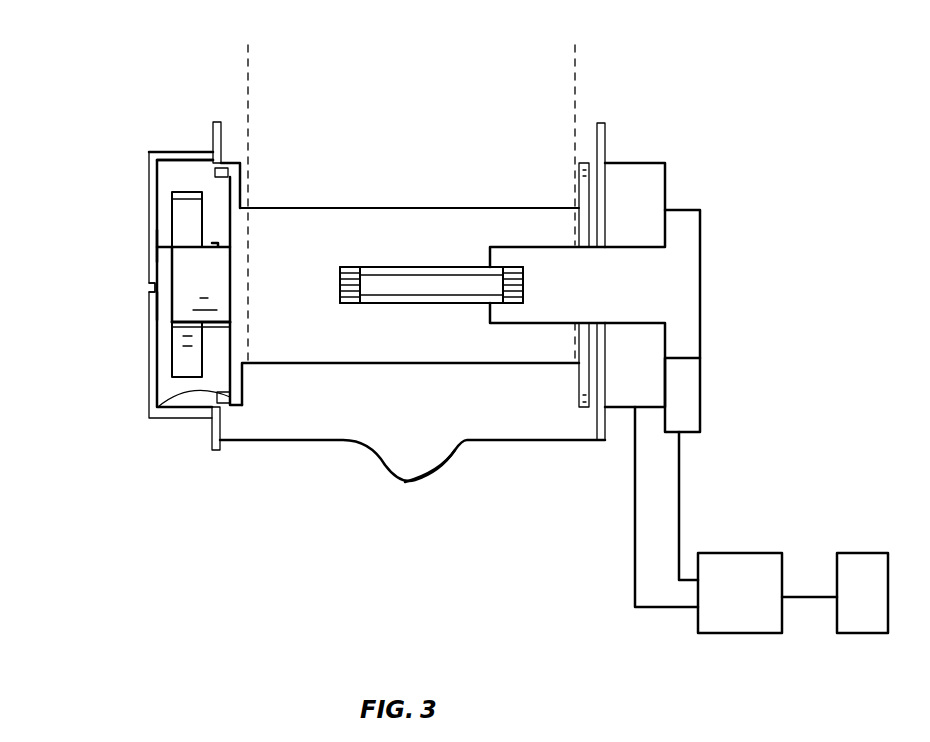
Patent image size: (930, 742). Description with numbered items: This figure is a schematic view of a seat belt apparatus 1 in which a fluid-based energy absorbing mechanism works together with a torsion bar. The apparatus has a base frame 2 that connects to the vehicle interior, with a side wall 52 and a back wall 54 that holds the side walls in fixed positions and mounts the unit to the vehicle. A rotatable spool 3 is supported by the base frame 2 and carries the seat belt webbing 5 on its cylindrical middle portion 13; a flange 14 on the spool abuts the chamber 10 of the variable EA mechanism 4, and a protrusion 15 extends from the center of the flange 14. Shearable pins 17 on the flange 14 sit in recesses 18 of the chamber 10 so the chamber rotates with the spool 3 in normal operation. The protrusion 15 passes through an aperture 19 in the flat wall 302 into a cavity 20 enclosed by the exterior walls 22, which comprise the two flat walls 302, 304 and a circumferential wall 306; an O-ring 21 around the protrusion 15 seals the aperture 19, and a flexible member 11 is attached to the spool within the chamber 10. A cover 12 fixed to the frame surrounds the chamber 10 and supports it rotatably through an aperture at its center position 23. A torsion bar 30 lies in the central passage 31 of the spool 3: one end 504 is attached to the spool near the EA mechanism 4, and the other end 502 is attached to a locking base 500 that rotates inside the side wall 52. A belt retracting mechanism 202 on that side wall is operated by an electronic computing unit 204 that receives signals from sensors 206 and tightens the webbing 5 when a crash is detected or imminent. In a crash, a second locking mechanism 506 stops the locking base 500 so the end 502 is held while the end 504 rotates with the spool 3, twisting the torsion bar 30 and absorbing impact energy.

The seat belt apparatus 1 is at (366, 154).
The base frame 2 is at (218, 446).
The rotatable spool 3 is at (440, 206).
The variable EA mechanism 4 is at (125, 440).
The seat belt webbing 5 is at (250, 92).
The chamber 10 is at (174, 184).
The flexible member 11 is at (173, 203).
The cover 12 is at (152, 248).
The middle portion 13 is at (458, 364).
The flange 14 is at (240, 395).
The protrusion 15 is at (172, 314).
The shearable pins 17 is at (212, 410).
The recesses 18 is at (226, 164).
The aperture 19 is at (212, 243).
The cavity 20 is at (172, 346).
The O-ring 21 is at (230, 326).
The exterior walls 22 is at (158, 398).
The center position 23 is at (150, 288).
The torsion bar 30 is at (413, 290).
The central passage 31 is at (433, 274).
The side wall 52 is at (606, 128).
The back wall 54 is at (425, 462).
The belt retracting mechanism 202 is at (655, 192).
The electronic computing unit 204 is at (723, 624).
The sensors 206 is at (865, 628).
The flat wall 302 is at (225, 221).
The flat wall 304 is at (158, 306).
The circumferential wall 306 is at (184, 185).
The locking base 500 is at (690, 268).
The other end of torsion bar 502 is at (513, 270).
The one end of torsion bar 504 is at (352, 270).
The second locking mechanism 506 is at (702, 398).